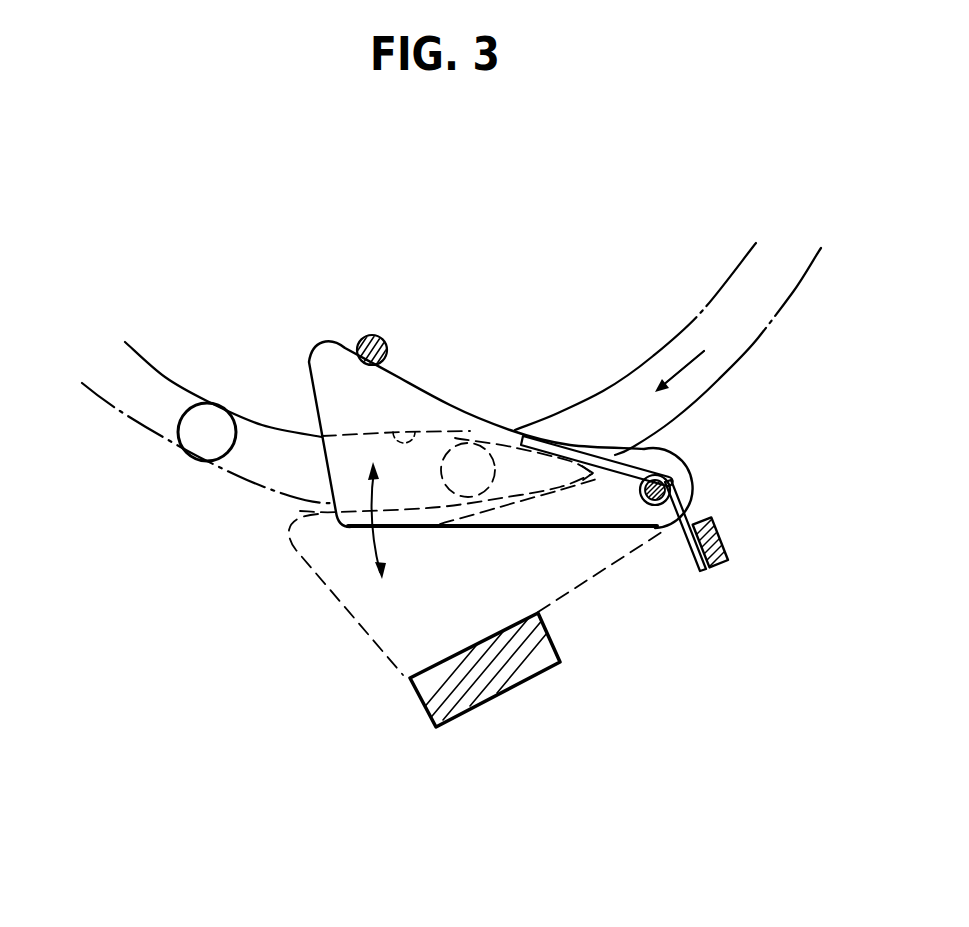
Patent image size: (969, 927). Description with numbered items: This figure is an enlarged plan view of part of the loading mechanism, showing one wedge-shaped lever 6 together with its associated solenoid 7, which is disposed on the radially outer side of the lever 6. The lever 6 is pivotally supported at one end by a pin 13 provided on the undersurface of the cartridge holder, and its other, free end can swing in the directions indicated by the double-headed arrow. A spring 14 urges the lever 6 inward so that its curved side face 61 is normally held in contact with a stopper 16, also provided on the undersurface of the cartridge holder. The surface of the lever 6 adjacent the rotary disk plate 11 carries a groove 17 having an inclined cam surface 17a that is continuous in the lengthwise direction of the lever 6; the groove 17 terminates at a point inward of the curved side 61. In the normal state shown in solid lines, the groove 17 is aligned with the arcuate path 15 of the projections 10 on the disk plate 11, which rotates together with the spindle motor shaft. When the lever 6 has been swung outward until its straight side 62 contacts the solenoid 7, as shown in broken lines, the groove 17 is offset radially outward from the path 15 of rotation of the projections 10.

The wedge-shaped lever 6 is at (440, 453).
The solenoid 7 is at (478, 681).
The projection 10 is at (207, 418).
The rotary disk plate 11 is at (588, 244).
The pin 13 is at (697, 476).
The spring 14 is at (699, 568).
The arcuate path 15 is at (728, 358).
The stopper 16 is at (371, 335).
The groove 17 is at (420, 422).
The inclined cam surface 17a is at (298, 507).
The curved side face 61 is at (483, 420).
The straight side 62 is at (472, 527).